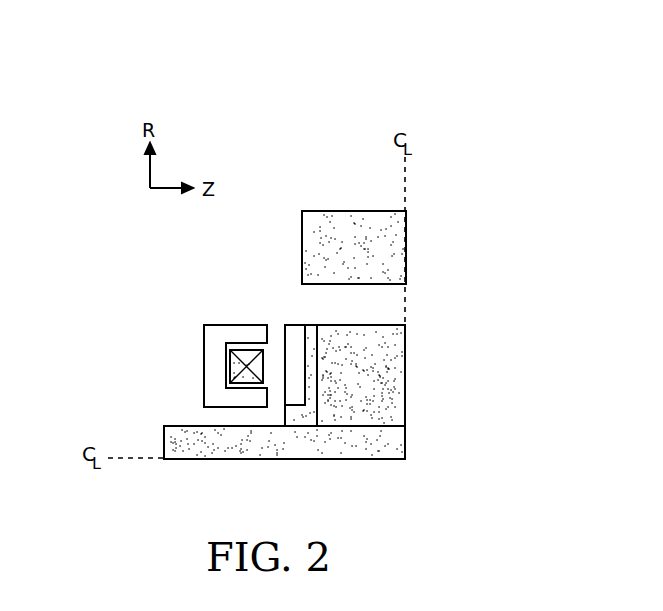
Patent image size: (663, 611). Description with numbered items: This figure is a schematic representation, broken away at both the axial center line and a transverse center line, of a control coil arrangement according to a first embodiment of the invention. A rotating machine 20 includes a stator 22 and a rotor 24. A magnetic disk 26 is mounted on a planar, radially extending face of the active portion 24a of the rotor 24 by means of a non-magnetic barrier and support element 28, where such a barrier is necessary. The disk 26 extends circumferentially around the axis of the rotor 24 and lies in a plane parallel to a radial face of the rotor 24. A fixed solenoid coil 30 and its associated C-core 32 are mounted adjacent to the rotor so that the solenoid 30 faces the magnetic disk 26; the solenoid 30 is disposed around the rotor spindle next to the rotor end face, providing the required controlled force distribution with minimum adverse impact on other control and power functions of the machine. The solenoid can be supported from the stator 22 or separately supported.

The rotating machine 20 is at (480, 268).
The stator 22 is at (360, 237).
The rotor 24 is at (302, 450).
The active portion 24a is at (382, 367).
The magnetic disk 26 is at (295, 335).
The non-magnetic barrier and support element 28 is at (312, 420).
The solenoid coil 30 is at (246, 354).
The C-core 32 is at (212, 368).